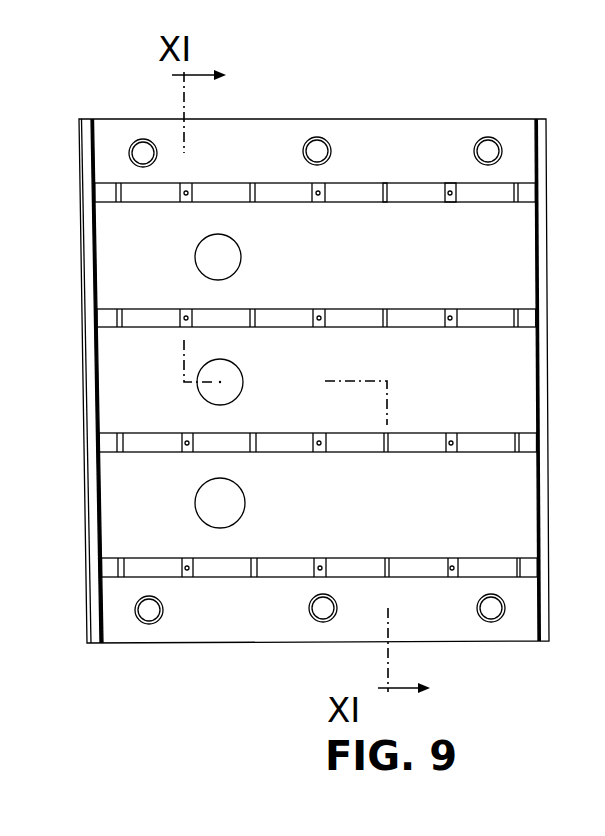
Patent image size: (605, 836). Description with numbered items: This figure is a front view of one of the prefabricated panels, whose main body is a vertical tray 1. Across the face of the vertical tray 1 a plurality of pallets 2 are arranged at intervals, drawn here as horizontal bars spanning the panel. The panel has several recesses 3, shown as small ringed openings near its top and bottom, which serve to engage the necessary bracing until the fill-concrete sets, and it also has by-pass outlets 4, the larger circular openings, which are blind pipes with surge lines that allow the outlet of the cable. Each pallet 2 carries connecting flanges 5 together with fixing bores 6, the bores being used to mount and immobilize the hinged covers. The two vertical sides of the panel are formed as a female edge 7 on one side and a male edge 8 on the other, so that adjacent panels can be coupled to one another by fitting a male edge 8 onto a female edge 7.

The vertical tray 1 is at (110, 147).
The pallet 2 is at (138, 195).
The recess 3 is at (318, 150).
The by-pass outlet 4 is at (208, 258).
The flange 5 is at (383, 193).
The bore to fix hinged cover 6 is at (448, 193).
The female edge 7 is at (548, 117).
The male edge 8 is at (88, 118).